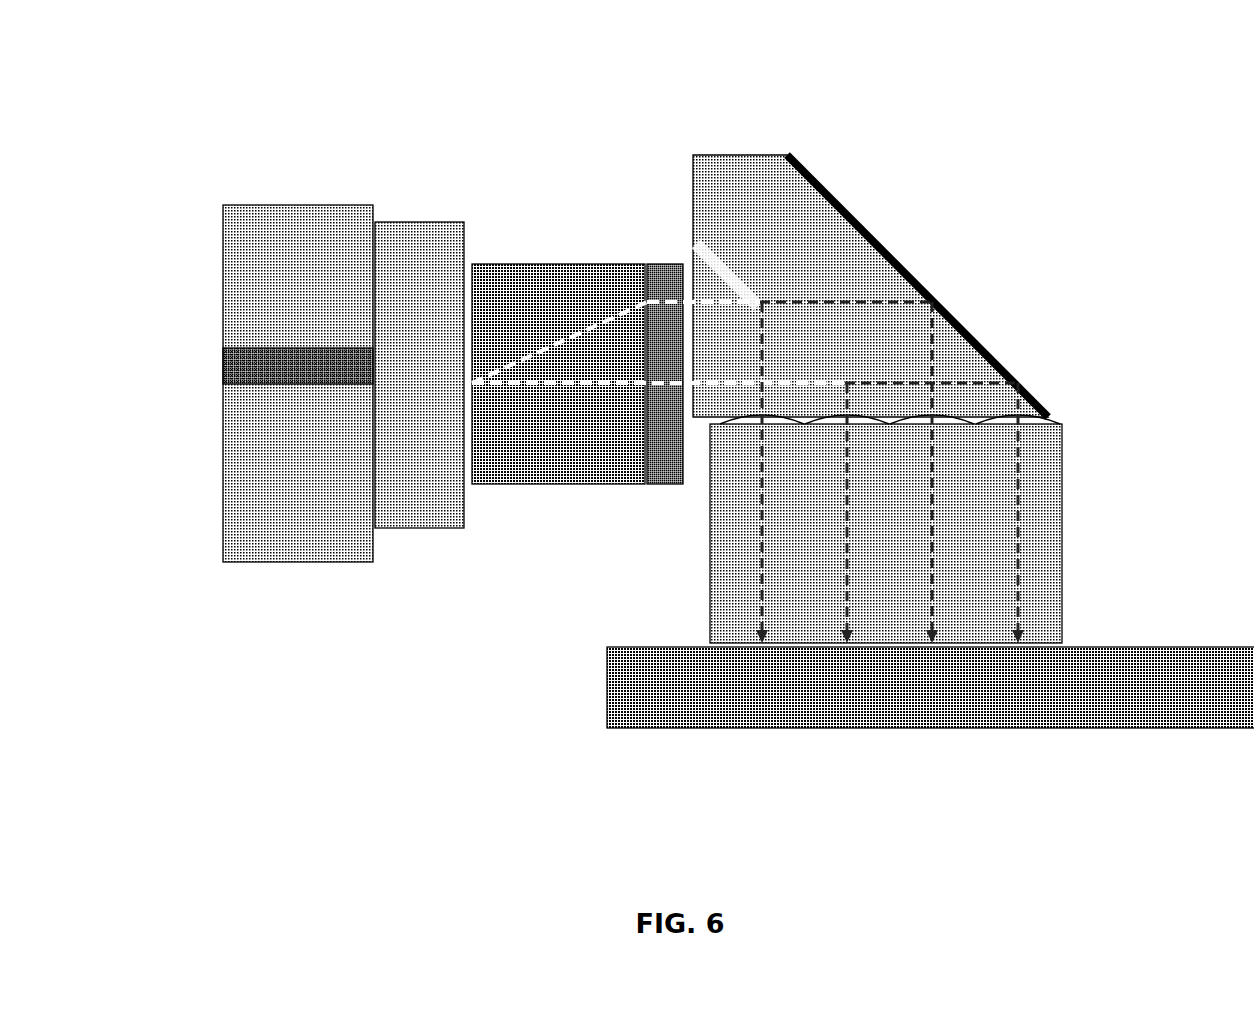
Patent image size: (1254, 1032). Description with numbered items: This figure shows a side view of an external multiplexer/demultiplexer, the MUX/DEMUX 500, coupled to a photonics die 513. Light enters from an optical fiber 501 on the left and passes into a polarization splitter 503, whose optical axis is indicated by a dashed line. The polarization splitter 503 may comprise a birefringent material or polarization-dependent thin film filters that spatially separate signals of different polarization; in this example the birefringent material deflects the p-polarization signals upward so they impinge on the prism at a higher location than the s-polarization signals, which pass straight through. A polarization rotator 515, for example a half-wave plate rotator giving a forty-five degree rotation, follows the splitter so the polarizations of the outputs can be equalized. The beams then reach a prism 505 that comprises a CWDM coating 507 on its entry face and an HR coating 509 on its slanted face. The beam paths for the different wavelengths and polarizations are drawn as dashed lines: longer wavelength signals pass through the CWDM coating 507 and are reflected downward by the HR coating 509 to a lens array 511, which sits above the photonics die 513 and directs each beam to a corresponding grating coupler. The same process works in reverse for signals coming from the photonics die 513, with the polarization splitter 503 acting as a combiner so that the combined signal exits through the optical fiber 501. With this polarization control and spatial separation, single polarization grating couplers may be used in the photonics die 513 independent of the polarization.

The external MUX/DEMUX 500 is at (140, 72).
The optical fiber 501 is at (223, 372).
The polarization splitter 503 is at (575, 263).
The prism 505 is at (750, 155).
The CWDM coating 507 is at (715, 253).
The HR coating 509 is at (880, 240).
The lens array 511 is at (1062, 435).
The photonics die 513 is at (1103, 727).
The polarization rotator 515 is at (663, 487).